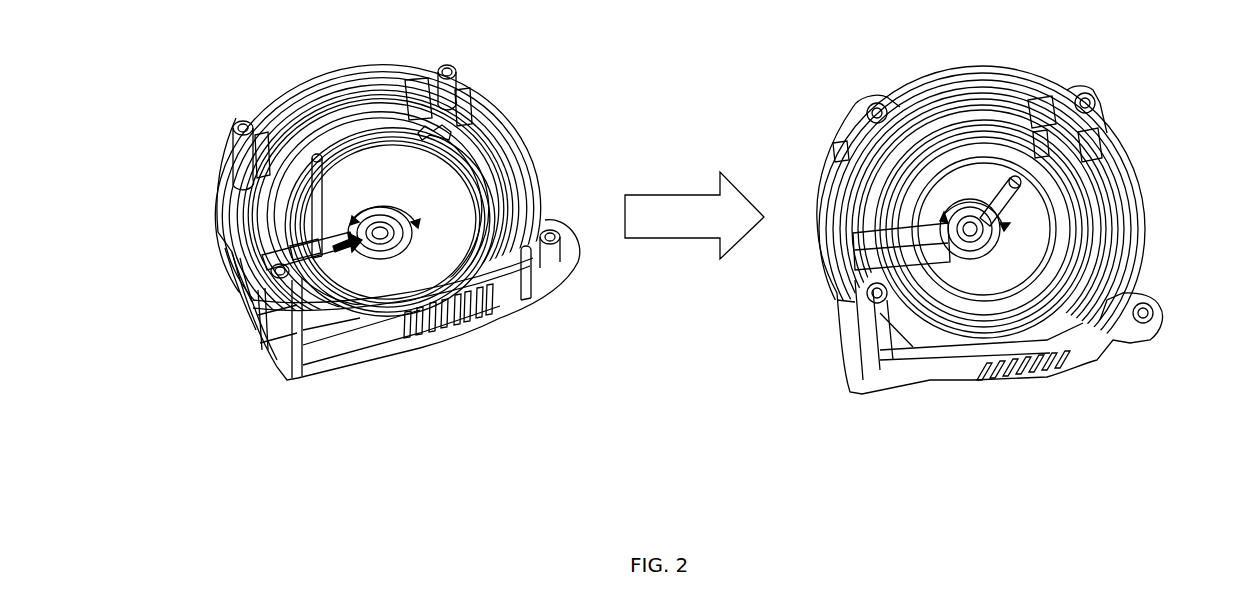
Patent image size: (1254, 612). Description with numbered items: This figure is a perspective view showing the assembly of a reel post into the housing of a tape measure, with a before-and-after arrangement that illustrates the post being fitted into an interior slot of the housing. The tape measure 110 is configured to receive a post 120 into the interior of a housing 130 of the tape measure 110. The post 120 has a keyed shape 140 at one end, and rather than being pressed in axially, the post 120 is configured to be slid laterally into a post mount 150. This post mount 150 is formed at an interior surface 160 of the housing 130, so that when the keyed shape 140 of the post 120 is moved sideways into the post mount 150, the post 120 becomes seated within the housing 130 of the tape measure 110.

The tape measure 110 is at (563, 92).
The post 120 is at (298, 150).
The housing 130 is at (232, 273).
The keyed shape 140 is at (260, 252).
The post mount 150 is at (400, 257).
The interior surface 160 is at (448, 255).